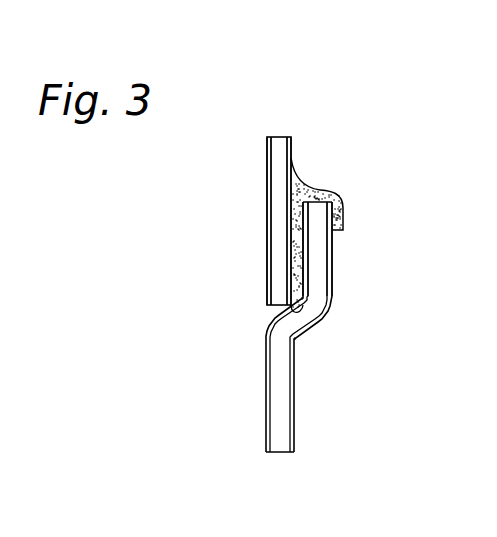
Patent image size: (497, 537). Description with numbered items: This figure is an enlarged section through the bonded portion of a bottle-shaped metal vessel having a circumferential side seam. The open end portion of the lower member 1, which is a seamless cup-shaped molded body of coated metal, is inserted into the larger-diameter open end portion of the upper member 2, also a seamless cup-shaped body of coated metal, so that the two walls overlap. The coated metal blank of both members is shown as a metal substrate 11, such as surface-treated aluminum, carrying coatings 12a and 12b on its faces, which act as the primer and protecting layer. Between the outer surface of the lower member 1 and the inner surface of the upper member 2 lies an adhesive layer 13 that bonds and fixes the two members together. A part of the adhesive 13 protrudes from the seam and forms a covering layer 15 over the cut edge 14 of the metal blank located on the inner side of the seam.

The lower member 1 is at (280, 452).
The upper member 2 is at (287, 137).
The metal substrate 11 is at (273, 248).
The coating 12a is at (267, 171).
The coating 12b is at (268, 295).
The adhesive layer 13 is at (296, 223).
The cut edge 14 is at (328, 191).
The covering layer 15 is at (310, 183).